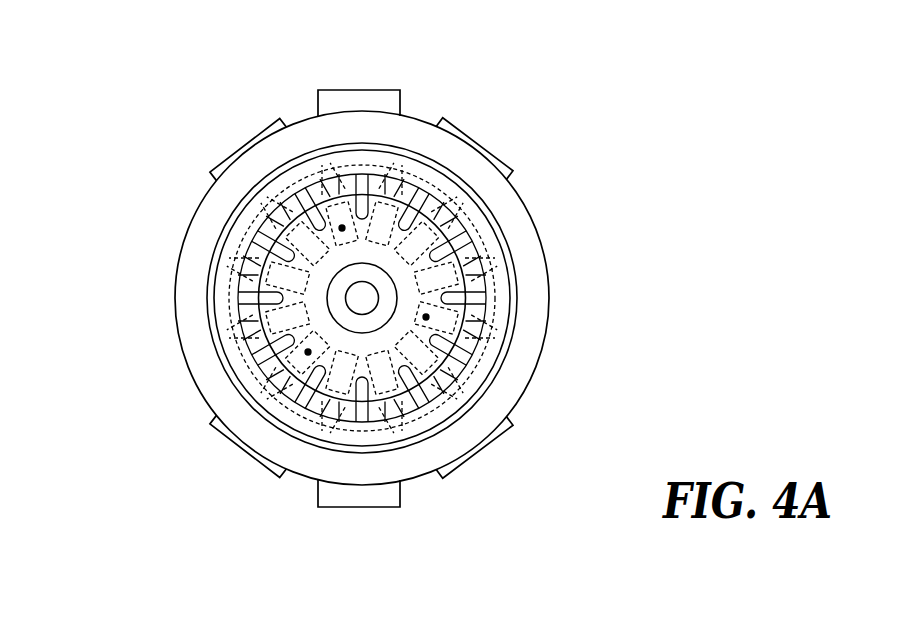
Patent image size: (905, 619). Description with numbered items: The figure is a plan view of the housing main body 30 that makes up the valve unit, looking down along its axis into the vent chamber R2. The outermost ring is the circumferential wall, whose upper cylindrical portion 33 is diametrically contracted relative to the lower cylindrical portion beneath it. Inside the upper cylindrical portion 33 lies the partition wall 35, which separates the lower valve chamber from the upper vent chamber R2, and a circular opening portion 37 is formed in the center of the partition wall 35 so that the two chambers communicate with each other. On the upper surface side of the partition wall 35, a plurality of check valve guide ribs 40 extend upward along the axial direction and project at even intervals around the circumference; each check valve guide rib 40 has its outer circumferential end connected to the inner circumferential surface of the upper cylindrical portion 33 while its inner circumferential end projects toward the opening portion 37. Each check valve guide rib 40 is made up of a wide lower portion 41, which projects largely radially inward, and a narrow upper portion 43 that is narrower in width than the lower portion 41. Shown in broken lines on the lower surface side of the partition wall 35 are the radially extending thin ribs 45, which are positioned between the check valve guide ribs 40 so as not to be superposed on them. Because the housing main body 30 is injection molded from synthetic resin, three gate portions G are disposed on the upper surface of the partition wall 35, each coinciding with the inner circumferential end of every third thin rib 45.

The housing main body 30 is at (552, 246).
The upper cylindrical portion 33 is at (250, 243).
The partition wall 35 is at (380, 339).
The opening portion 37 is at (363, 301).
The check valve guide rib 40 is at (567, 72).
The lower portion 41 is at (368, 201).
The upper portion 43 is at (362, 196).
The thin rib 45 is at (283, 180).
The gate portion G is at (342, 228).
The vent chamber R2 is at (396, 259).